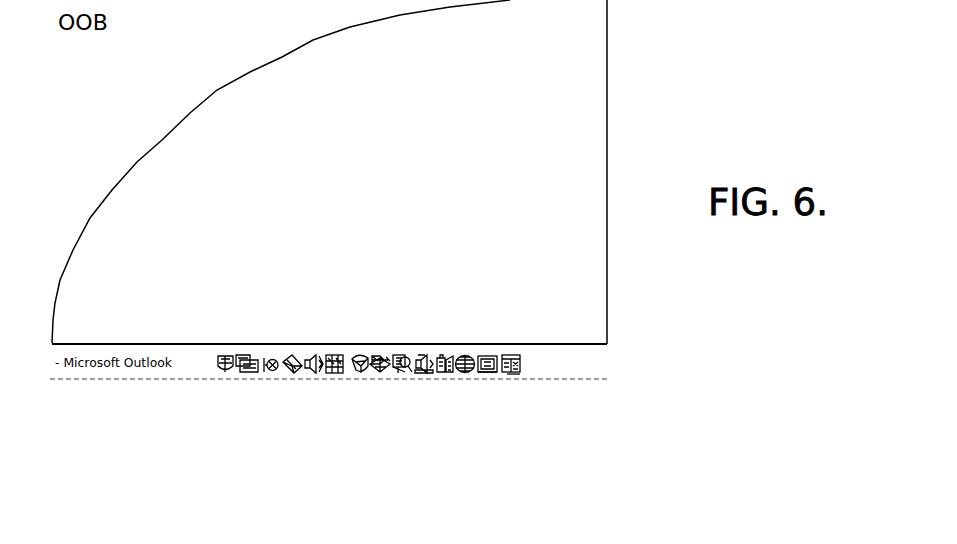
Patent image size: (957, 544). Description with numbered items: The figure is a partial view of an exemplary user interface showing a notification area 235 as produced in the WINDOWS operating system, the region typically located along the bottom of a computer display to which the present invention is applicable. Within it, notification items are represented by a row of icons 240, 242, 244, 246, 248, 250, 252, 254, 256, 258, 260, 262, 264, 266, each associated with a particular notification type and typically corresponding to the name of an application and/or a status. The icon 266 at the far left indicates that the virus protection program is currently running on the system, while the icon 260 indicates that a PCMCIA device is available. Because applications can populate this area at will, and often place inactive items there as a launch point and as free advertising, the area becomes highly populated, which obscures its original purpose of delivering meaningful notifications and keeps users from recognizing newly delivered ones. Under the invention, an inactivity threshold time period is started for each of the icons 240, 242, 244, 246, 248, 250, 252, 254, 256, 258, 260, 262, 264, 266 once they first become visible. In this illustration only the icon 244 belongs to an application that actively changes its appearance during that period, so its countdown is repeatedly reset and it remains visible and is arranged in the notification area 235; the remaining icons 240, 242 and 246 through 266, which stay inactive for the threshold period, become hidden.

The notification area of taskbar 235 is at (600, 362).
The icon 240 is at (513, 374).
The icon 242 is at (485, 356).
The icon 244 is at (462, 374).
The icon 246 is at (442, 355).
The icon 248 is at (420, 379).
The icon 250 is at (406, 374).
The icon 252 is at (384, 374).
The icon 254 is at (366, 374).
The icon 256 is at (331, 374).
The icon 258 is at (321, 354).
The icon 260 is at (293, 374).
The icon 262 is at (275, 374).
The icon 264 is at (241, 374).
The icon 266 is at (226, 373).